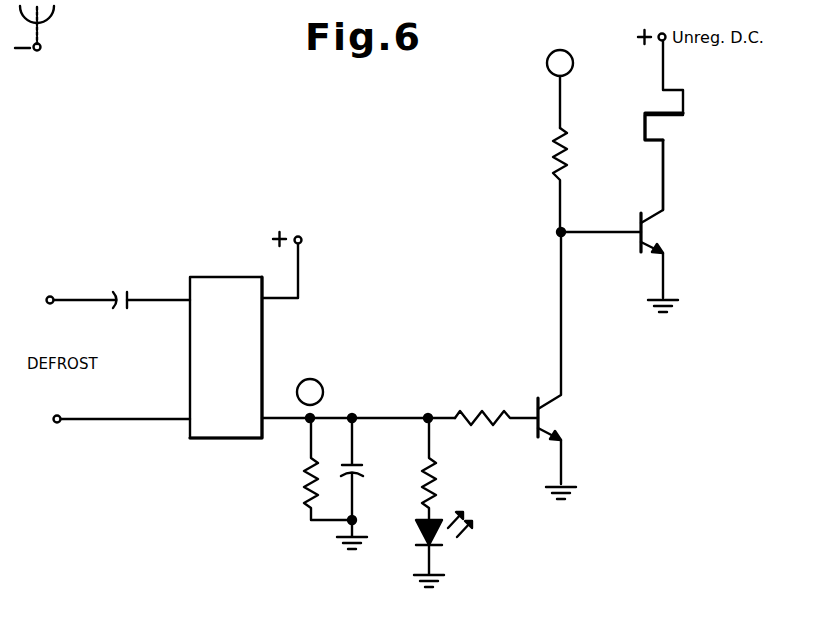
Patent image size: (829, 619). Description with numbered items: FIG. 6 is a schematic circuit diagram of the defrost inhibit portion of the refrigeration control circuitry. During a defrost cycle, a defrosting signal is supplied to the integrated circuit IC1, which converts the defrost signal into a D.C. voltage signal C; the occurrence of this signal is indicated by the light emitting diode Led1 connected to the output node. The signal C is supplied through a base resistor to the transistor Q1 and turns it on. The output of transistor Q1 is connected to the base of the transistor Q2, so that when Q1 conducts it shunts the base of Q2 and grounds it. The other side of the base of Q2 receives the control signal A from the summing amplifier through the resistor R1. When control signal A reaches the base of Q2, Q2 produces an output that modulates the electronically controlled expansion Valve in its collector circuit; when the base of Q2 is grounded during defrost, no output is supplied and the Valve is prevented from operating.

The integrated circuit IC1 is at (246, 335).
The D.C. voltage signal C is at (310, 392).
The LED Led1 is at (456, 502).
The transistor Q1 is at (520, 365).
The transistor Q2 is at (622, 226).
The resistor R1 is at (547, 180).
The control signal A is at (560, 89).
The electronically controlled expansion valve Valve is at (686, 120).